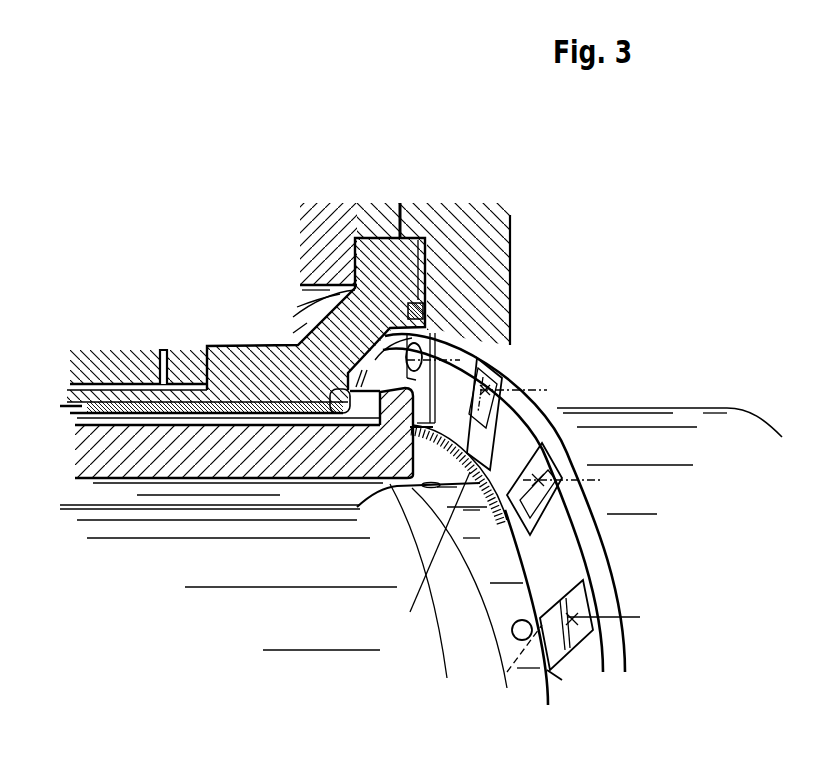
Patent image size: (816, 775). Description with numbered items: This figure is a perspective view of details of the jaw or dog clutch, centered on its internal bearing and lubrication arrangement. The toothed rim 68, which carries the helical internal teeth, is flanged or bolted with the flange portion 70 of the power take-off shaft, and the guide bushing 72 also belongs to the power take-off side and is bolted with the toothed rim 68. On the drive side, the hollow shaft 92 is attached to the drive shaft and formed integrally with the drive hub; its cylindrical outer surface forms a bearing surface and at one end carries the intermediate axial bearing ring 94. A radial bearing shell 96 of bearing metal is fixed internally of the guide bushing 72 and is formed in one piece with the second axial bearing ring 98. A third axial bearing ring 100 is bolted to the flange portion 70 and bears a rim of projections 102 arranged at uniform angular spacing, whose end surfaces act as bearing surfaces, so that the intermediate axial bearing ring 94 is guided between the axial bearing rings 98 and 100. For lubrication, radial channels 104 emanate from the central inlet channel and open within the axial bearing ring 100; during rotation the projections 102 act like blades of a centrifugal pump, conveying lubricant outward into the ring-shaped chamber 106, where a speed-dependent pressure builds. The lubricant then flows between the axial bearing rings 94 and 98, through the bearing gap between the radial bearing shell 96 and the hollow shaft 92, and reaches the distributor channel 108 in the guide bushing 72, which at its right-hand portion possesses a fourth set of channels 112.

The toothed rim 68 is at (345, 217).
The flange portion 70 is at (478, 260).
The guide bushing 72 is at (246, 367).
The hollow shaft 92 is at (122, 458).
The intermediate axial bearing ring 94 is at (392, 405).
The radial bearing shell 96 is at (220, 410).
The second axial bearing ring 98 is at (333, 402).
The third axial bearing ring 100 is at (537, 408).
The projections 102 is at (522, 520).
The radial channels 104 is at (517, 640).
The ring-shaped chamber 106 is at (430, 330).
The distributor channel 108 is at (100, 380).
The fourth set of channels 112 is at (163, 370).